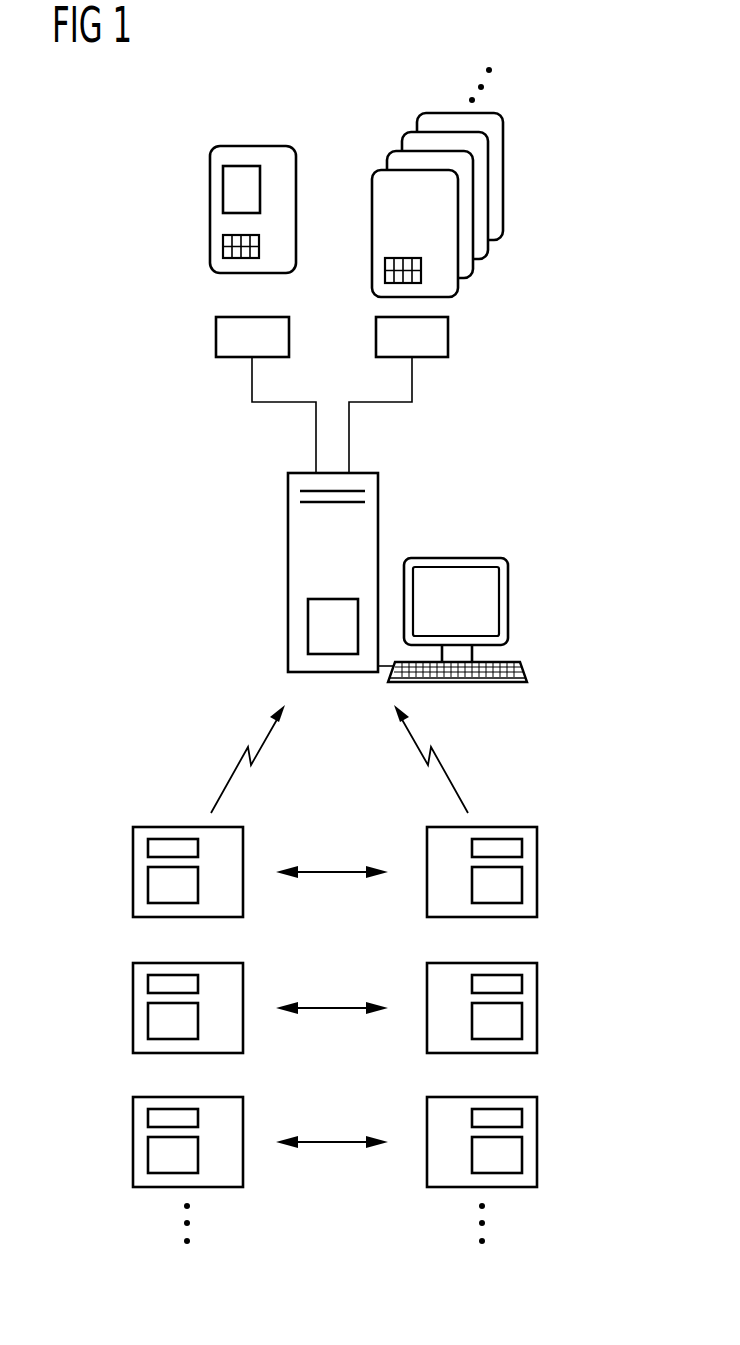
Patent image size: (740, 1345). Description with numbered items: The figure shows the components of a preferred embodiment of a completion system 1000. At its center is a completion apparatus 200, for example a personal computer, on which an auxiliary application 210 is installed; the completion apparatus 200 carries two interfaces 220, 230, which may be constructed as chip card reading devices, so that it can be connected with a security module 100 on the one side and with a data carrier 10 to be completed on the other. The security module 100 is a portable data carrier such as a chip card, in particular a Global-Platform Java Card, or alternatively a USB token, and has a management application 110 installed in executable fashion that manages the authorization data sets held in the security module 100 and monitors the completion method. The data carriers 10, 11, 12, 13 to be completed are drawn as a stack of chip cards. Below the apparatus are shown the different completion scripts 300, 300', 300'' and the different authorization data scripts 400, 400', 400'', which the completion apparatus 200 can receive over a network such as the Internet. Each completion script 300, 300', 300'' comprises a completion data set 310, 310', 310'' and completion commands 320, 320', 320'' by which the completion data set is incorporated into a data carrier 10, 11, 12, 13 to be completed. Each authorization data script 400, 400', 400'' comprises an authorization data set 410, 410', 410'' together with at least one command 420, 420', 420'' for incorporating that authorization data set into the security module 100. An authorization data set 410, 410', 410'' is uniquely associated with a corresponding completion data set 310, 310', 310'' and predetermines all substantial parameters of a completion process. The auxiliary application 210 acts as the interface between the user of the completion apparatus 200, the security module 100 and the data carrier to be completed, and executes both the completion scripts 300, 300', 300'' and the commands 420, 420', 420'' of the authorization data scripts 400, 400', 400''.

The completion system 1000 is at (552, 76).
The data carrier 10 is at (458, 240).
The data carrier 11 is at (473, 203).
The data carrier 12 is at (488, 172).
The data carrier 13 is at (503, 137).
The security module 100 is at (215, 209).
The management application 110 is at (210, 233).
The completion apparatus 200 is at (376, 577).
The auxiliary application 210 is at (308, 630).
The interface 220 is at (449, 337).
The interface 230 is at (216, 337).
The completion script 300 is at (150, 877).
The completion data set 310 is at (134, 881).
The completion commands 320 is at (135, 839).
The completion script 300' is at (149, 1013).
The completion data set 310' is at (133, 1016).
The completion commands 320' is at (134, 975).
The completion script 300'' is at (146, 1147).
The completion data set 310'' is at (130, 1150).
The completion commands 320'' is at (131, 1109).
The authorization data script 400 is at (521, 877).
The authorization data set 410 is at (536, 881).
The command 420 is at (536, 839).
The authorization data script 400' is at (523, 1013).
The authorization data set 410' is at (538, 1016).
The command 420' is at (538, 975).
The authorization data script 400'' is at (525, 1147).
The authorization data set 410'' is at (540, 1150).
The command 420'' is at (540, 1109).